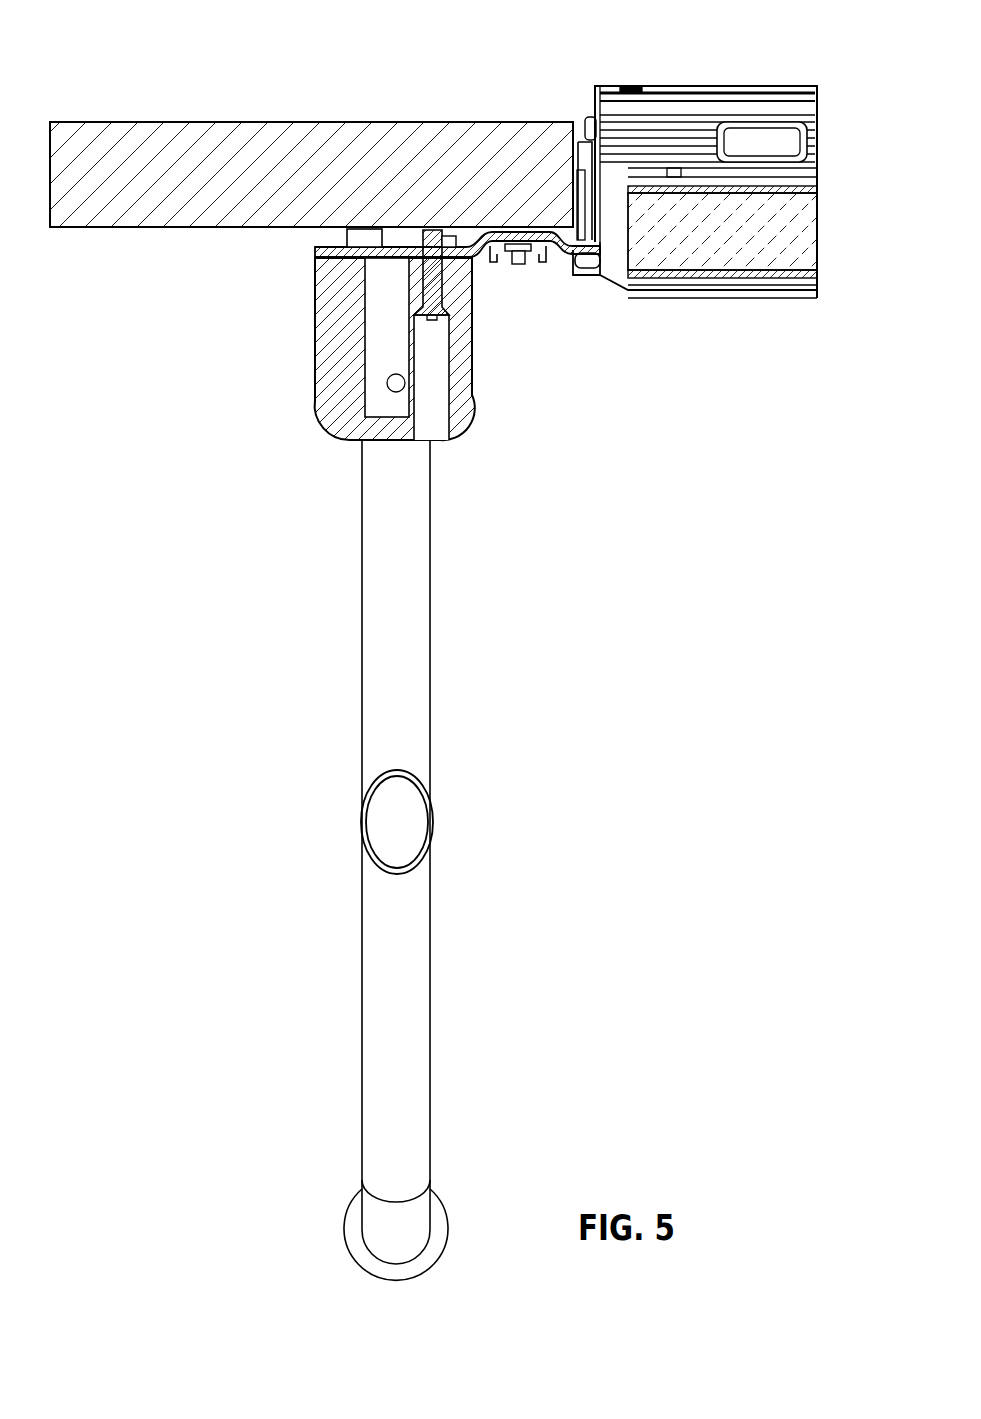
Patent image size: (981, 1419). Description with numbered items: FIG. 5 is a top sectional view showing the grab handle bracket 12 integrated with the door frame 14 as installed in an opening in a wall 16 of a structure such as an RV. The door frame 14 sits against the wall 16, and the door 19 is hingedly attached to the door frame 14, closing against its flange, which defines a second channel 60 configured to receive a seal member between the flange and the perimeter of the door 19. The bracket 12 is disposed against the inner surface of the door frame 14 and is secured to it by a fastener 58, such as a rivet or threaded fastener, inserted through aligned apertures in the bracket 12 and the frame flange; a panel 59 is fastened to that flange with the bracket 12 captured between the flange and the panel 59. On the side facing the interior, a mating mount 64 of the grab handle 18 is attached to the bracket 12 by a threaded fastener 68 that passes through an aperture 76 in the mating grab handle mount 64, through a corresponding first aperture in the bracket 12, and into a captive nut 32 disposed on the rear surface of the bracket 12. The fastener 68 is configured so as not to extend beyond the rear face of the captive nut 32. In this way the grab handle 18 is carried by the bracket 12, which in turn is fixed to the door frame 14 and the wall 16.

The grab handle bracket 12 is at (478, 250).
The door frame 14 is at (612, 88).
The wall 16 is at (148, 150).
The grab handle 18 is at (400, 665).
The door 19 is at (760, 250).
The captive nut 32 is at (405, 242).
The fastener 58 is at (523, 265).
The panel 59 is at (578, 208).
The second channel 60 is at (640, 89).
The mating grab handle mount 64 is at (332, 360).
The threaded fastener 68 is at (432, 285).
The aperture 76 is at (430, 415).